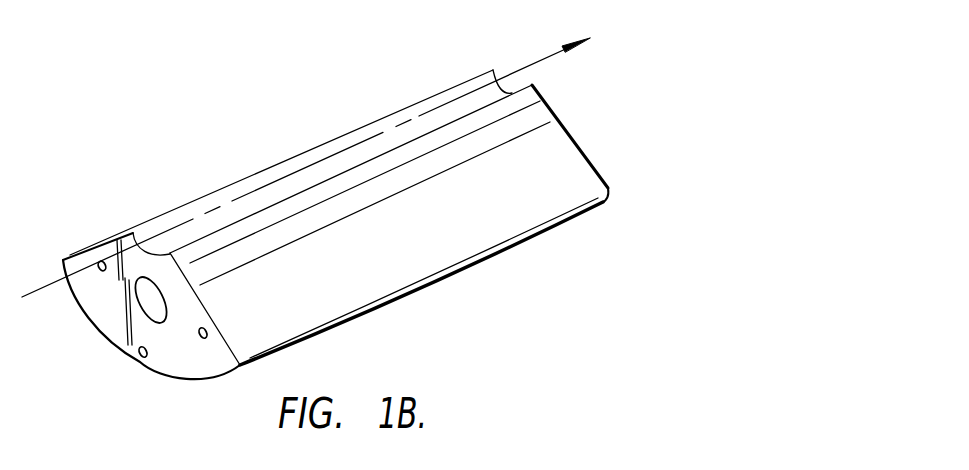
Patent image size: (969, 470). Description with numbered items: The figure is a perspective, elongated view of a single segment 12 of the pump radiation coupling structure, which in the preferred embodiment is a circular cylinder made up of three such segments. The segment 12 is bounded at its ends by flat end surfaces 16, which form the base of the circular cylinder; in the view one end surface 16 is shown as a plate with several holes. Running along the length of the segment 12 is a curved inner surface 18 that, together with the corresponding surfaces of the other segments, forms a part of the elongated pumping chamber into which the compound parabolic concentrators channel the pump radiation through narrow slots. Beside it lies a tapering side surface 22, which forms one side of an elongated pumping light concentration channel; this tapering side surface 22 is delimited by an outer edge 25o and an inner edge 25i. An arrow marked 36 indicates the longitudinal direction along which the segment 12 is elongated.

The segment 12 is at (596, 125).
The flat end surface 16 is at (143, 328).
The curved inner surface 18 is at (283, 175).
The tapering side surface 22 is at (397, 248).
The outer edge 25o is at (363, 128).
The inner edge 25i is at (433, 130).
The longitudinal axis 36 is at (542, 60).